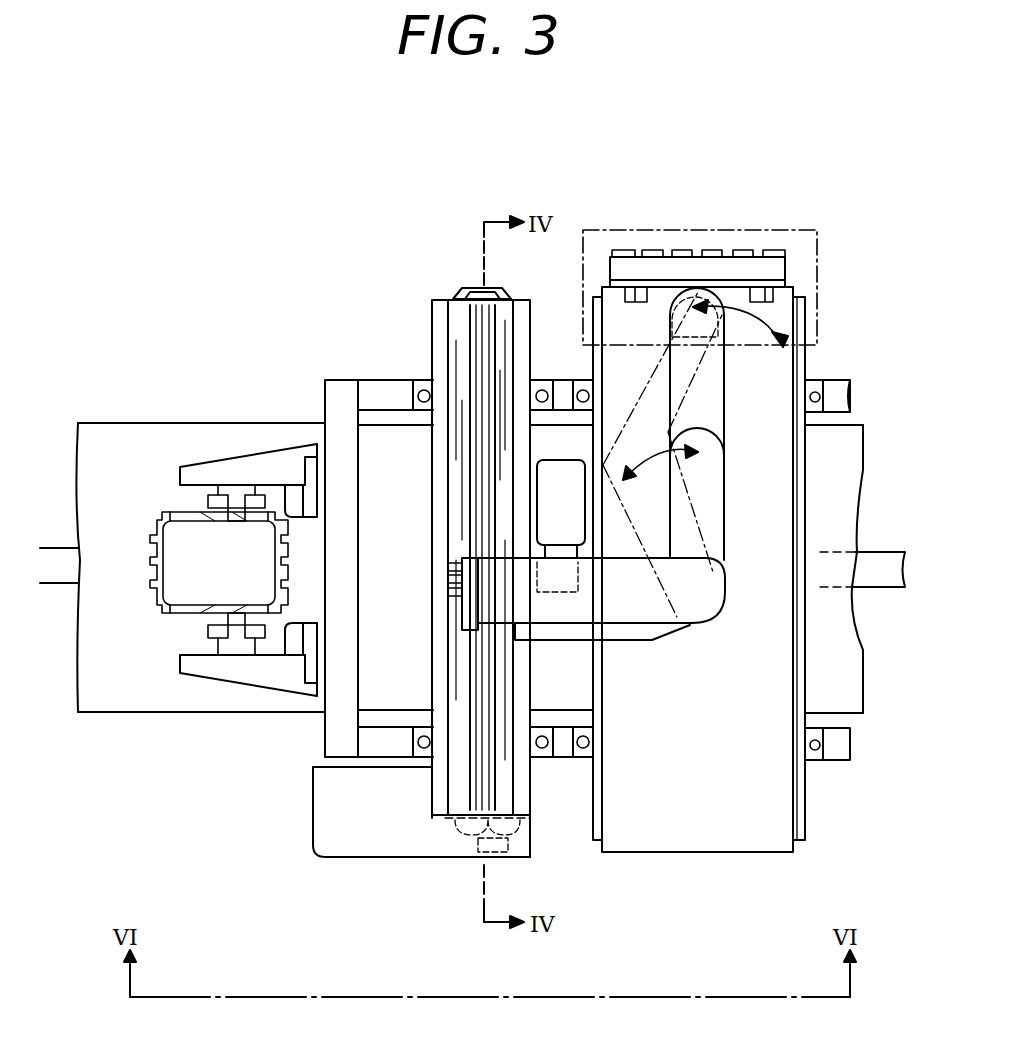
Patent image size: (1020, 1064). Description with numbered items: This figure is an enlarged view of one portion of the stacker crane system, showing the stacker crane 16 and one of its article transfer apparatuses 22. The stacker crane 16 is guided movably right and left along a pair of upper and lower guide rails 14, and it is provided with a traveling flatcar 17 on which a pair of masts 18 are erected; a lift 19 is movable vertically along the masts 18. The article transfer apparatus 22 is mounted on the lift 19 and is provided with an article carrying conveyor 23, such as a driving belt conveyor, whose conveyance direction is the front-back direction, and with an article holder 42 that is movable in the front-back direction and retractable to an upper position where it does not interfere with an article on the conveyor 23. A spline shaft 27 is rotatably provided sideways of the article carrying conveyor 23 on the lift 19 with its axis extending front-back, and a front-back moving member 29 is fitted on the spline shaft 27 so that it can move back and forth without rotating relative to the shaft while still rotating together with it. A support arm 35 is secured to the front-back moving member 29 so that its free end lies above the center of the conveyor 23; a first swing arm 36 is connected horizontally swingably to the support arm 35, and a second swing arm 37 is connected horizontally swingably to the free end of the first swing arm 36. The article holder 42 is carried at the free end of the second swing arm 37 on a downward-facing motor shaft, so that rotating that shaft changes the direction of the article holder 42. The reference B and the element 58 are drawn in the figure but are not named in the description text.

The guide rail 14 is at (878, 570).
The stacker crane 16 is at (225, 688).
The traveling flatcar 17 is at (163, 683).
The mast 18 is at (160, 608).
The lift 19 is at (345, 722).
The article transfer apparatus 22 is at (740, 603).
The article carrying conveyor 23 is at (775, 797).
The spline shaft 27 is at (490, 797).
The front-back moving member 29 is at (470, 578).
The support arm 35 is at (643, 605).
The first swing arm 36 is at (705, 492).
The second swing arm 37 is at (715, 400).
The article holder 42 is at (745, 268).
The suction plate 58 is at (653, 268).
The board B is at (818, 313).